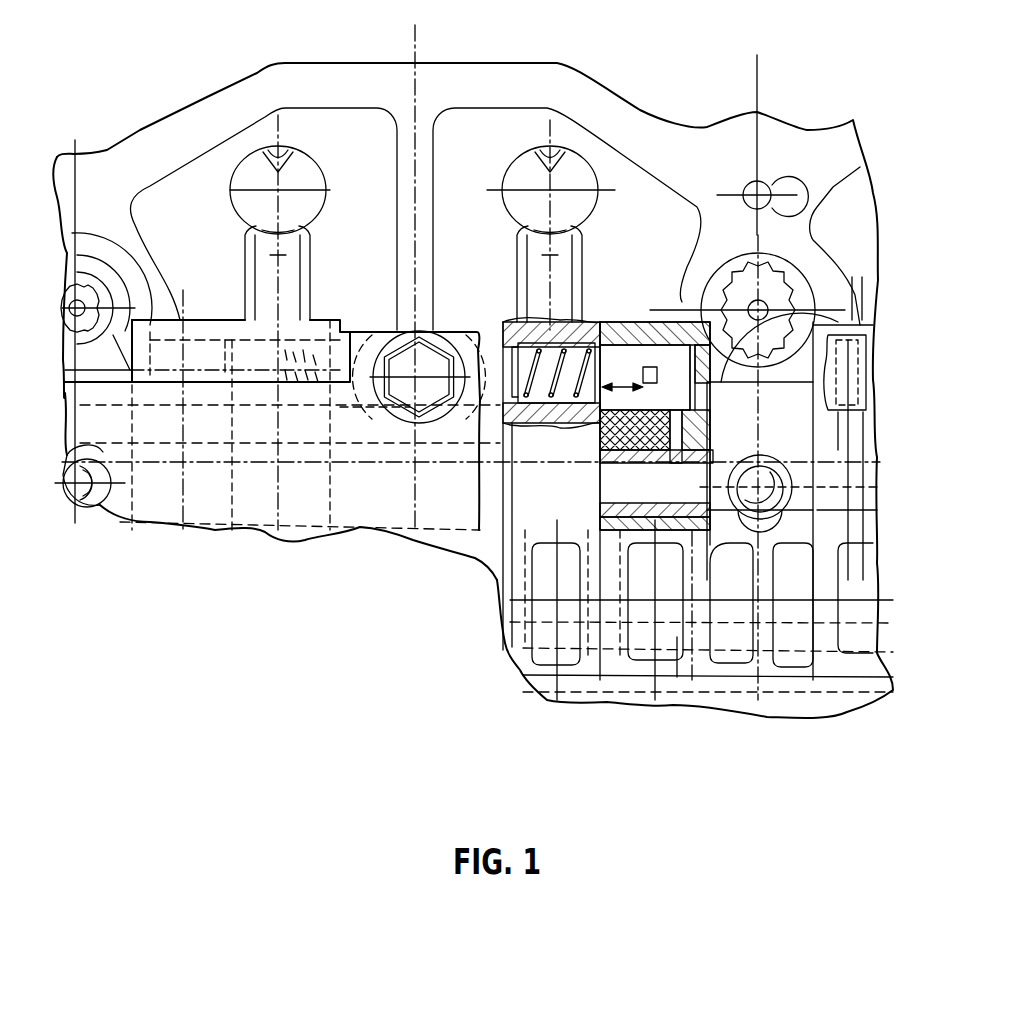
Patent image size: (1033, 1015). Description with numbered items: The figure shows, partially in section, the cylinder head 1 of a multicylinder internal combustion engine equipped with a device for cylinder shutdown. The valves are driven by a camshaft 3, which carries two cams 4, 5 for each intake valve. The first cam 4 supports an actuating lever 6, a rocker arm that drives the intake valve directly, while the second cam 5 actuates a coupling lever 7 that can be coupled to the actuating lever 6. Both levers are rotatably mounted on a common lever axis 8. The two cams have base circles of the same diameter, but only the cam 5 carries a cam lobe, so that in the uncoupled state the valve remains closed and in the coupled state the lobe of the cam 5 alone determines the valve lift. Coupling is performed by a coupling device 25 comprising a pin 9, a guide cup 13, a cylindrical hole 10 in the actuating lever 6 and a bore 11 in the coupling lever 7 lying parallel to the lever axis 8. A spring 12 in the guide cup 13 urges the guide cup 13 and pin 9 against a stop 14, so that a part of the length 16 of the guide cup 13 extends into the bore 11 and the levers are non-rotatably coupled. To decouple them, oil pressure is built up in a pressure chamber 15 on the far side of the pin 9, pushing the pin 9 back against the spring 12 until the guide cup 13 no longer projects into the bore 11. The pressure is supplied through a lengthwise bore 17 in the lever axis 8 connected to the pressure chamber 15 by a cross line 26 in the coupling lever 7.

The cylinder head 1 is at (797, 92).
The camshaft 3 is at (503, 577).
The cam 4 is at (578, 673).
The cam 5 is at (678, 670).
The actuating lever 6 is at (300, 283).
The coupling lever 7 is at (203, 323).
The lever axis 8 is at (633, 457).
The pin 9 is at (645, 347).
The cylindrical hole 10 is at (522, 328).
The bore 11 is at (613, 430).
The spring 12 is at (516, 348).
The guide cup 13 is at (547, 422).
The stop 14 is at (697, 388).
The pressure chamber 15 is at (710, 420).
The length 16 is at (645, 377).
The lengthwise bore 17 is at (664, 494).
The coupling device 25 is at (613, 318).
The cross line 26 is at (676, 430).